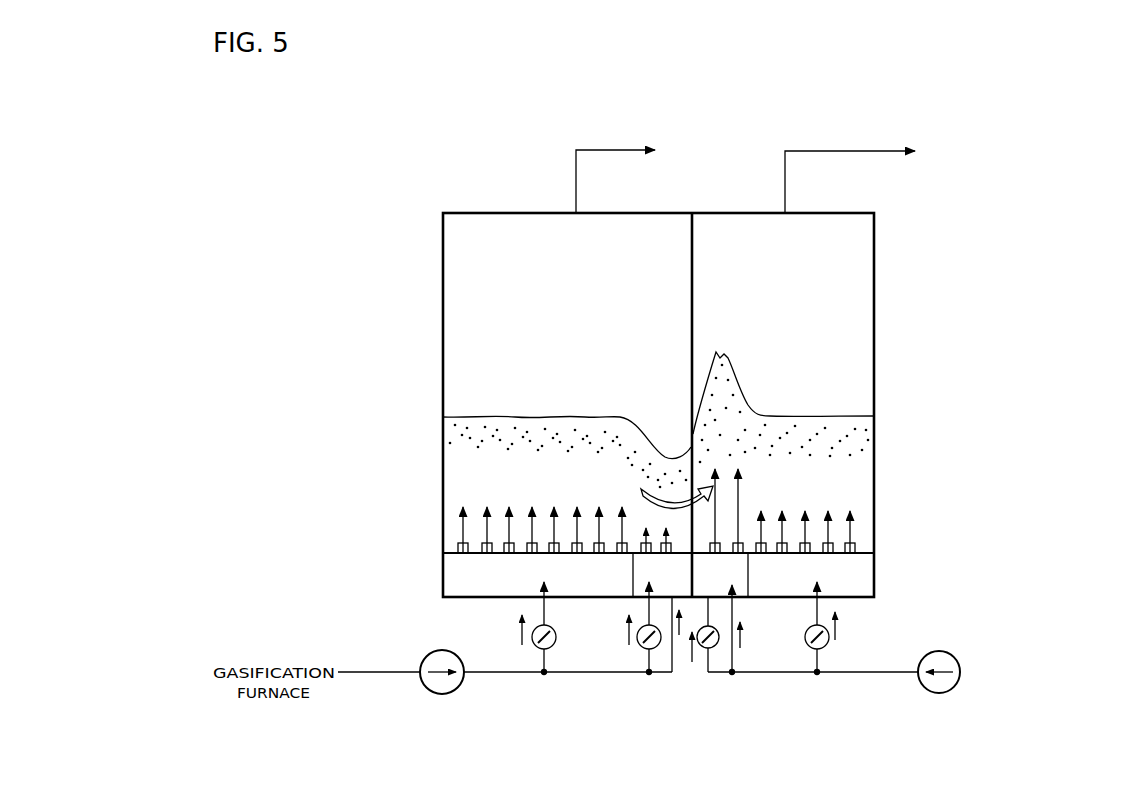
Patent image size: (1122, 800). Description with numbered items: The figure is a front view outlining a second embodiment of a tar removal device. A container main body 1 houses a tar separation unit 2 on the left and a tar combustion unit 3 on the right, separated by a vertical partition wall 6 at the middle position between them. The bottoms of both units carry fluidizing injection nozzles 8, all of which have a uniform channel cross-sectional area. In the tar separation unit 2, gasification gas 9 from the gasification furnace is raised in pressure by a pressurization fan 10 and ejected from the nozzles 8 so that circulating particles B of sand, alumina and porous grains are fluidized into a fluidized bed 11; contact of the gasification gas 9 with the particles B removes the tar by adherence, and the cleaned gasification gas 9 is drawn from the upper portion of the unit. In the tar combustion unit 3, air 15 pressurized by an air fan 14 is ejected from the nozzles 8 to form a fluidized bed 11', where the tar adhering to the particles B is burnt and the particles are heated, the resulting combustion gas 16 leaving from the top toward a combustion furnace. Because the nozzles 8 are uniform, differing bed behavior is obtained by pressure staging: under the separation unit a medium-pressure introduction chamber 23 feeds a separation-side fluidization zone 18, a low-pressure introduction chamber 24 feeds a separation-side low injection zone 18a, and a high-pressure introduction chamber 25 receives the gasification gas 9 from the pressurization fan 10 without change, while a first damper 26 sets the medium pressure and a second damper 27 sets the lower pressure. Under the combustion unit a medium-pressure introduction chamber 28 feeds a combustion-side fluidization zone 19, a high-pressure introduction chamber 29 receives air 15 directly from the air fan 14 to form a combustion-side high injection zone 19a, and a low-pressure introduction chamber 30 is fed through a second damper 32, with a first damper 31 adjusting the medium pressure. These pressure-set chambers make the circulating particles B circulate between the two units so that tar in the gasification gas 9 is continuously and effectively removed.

The container main body 1 is at (443, 234).
The tar separation unit 2 is at (493, 316).
The tar combustion unit 3 is at (825, 327).
The vertical partition wall 6 is at (704, 246).
The fluidizing injection nozzles 8 is at (505, 542).
The gasification gas 9 is at (620, 137).
The pressurization fan 10 is at (437, 694).
The fluidized bed 11 is at (567, 421).
The fluidized bed 11' is at (783, 407).
The air fan 14 is at (936, 694).
The air 15 is at (848, 660).
The combustion gas 16 is at (895, 138).
The separation-side fluidization zone 18 is at (540, 413).
The separation-side low injection zone 18a is at (663, 450).
The combustion-side fluidization zone 19 is at (841, 412).
The combustion-side high injection zone 19a is at (737, 350).
The medium-pressure introduction chamber 23 is at (477, 572).
The low-pressure introduction chamber 24 is at (643, 573).
The high-pressure introduction chamber 25 is at (683, 600).
The first damper 26 is at (533, 645).
The second damper 27 is at (638, 646).
The medium-pressure introduction chamber 28 is at (855, 572).
The high-pressure introduction chamber 29 is at (738, 585).
The low-pressure introduction chamber 30 is at (717, 655).
The first damper 31 is at (807, 646).
The second damper 32 is at (700, 650).
The circulating particles B is at (612, 413).